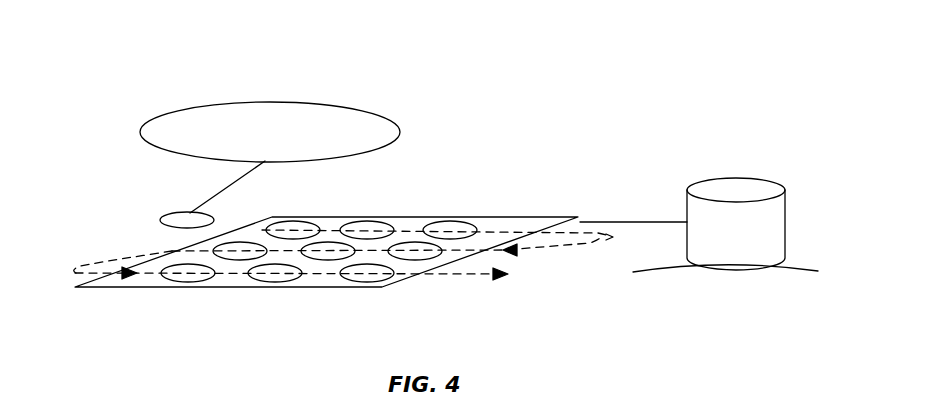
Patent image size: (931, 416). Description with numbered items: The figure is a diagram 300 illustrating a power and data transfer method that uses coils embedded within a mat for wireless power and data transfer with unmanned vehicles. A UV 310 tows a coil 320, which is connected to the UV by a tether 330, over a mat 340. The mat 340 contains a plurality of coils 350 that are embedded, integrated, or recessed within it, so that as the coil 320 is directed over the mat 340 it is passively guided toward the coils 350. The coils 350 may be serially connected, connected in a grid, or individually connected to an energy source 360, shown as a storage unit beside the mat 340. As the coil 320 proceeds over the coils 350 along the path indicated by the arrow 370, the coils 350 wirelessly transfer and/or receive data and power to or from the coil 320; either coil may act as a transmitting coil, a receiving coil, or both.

The diagram 300 is at (86, 70).
The UV 310 is at (140, 132).
The coil 320 is at (160, 220).
The tether 330 is at (218, 194).
The mat 340 is at (500, 218).
The coils 350 is at (370, 222).
The energy source 360 is at (735, 188).
The arrow 370 is at (570, 245).